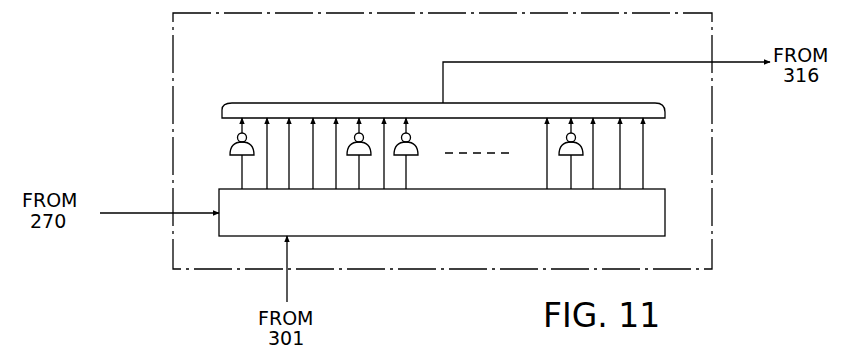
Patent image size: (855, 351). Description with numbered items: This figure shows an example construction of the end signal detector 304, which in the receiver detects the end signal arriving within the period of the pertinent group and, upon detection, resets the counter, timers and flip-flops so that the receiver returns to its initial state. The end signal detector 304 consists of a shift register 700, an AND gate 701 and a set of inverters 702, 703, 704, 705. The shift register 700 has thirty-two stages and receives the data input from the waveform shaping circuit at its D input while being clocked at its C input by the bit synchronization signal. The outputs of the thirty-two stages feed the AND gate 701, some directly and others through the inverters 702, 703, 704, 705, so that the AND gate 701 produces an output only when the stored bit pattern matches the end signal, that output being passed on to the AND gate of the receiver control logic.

The end signal detector 304 is at (172, 44).
The shift register 700 is at (490, 237).
The AND gate 701 is at (318, 103).
The inverter 702 is at (232, 148).
The inverter 703 is at (362, 157).
The inverter 704 is at (415, 147).
The inverter 705 is at (578, 150).